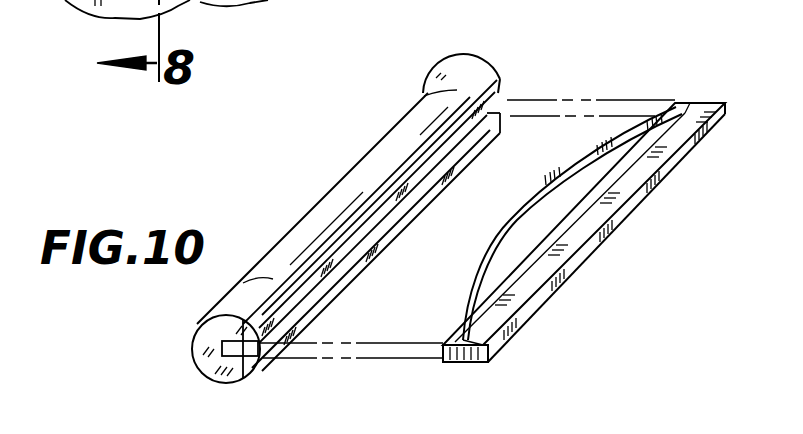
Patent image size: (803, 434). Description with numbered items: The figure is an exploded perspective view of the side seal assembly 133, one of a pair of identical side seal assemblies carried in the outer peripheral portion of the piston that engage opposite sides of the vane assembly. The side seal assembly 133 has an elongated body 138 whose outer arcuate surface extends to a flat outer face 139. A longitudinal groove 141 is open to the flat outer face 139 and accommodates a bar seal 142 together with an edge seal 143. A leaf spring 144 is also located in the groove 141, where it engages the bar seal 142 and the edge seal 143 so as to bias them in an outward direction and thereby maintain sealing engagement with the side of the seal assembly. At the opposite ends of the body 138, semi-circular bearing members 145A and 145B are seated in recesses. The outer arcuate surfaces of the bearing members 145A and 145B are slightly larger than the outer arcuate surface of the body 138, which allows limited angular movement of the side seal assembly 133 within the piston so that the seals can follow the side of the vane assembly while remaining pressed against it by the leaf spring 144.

The side seal assembly 133 is at (610, 76).
The body 138 is at (355, 190).
The flat outer face 139 is at (273, 353).
The longitudinal groove 141 is at (233, 360).
The bar seal 142 is at (577, 260).
The edge seal 143 is at (460, 365).
The leaf spring 144 is at (578, 152).
The semi-circular bearing member 145A is at (218, 330).
The semi-circular bearing member 145B is at (455, 80).